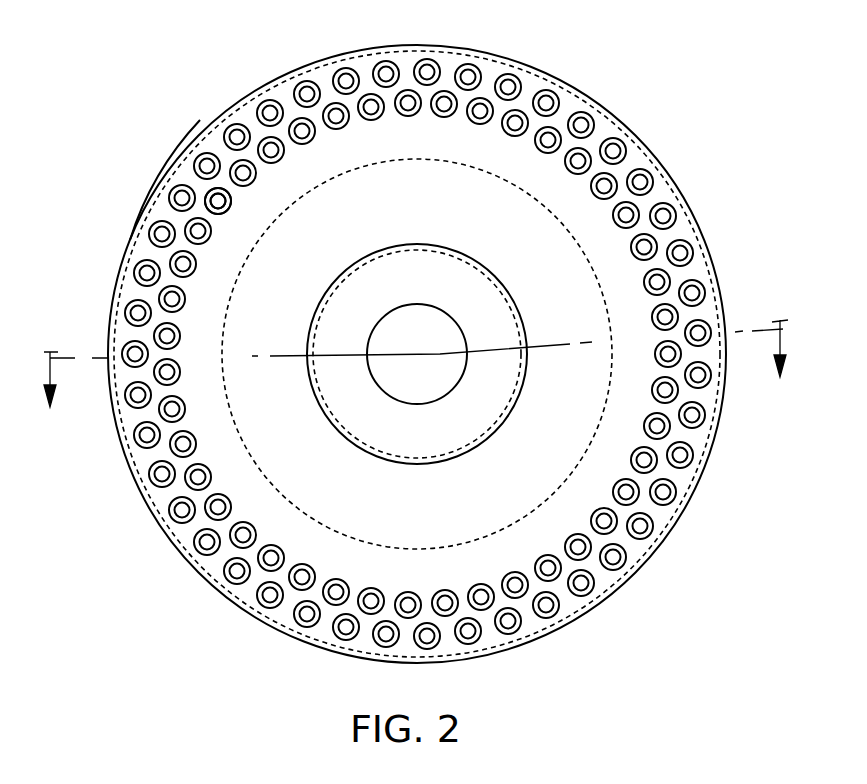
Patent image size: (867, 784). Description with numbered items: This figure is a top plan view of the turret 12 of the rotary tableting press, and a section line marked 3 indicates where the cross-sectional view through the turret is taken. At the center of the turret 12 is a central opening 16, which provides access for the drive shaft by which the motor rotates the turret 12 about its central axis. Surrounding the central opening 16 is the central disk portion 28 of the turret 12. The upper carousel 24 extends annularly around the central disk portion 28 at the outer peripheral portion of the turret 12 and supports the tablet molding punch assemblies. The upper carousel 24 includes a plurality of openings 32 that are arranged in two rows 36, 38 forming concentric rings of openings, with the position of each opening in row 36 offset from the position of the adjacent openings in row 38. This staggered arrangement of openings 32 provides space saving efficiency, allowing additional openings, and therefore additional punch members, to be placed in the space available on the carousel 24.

The turret 12 is at (131, 245).
The central opening 16 is at (374, 328).
The upper carousel 24 is at (211, 144).
The central disk portion 28 is at (452, 210).
The openings 32 is at (262, 109).
The row 36 is at (165, 188).
The row 38 is at (233, 212).
The section line 3- 3 is at (414, 364).